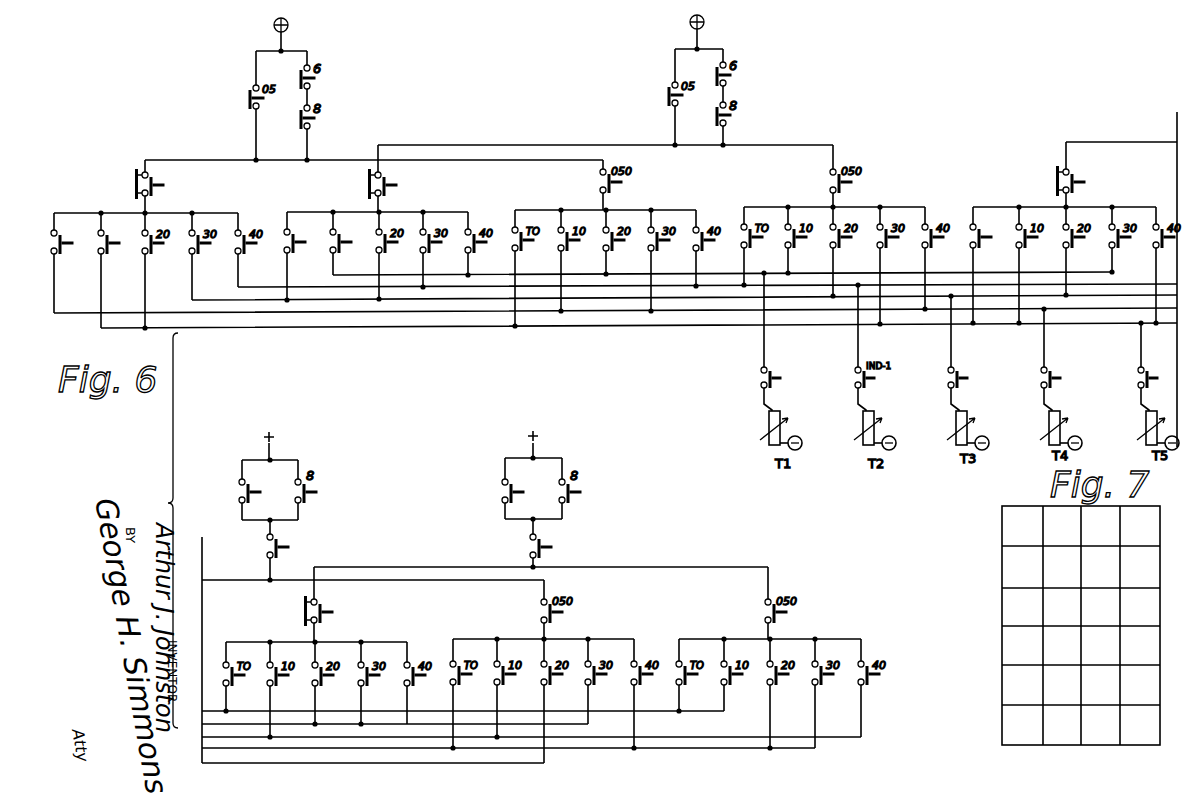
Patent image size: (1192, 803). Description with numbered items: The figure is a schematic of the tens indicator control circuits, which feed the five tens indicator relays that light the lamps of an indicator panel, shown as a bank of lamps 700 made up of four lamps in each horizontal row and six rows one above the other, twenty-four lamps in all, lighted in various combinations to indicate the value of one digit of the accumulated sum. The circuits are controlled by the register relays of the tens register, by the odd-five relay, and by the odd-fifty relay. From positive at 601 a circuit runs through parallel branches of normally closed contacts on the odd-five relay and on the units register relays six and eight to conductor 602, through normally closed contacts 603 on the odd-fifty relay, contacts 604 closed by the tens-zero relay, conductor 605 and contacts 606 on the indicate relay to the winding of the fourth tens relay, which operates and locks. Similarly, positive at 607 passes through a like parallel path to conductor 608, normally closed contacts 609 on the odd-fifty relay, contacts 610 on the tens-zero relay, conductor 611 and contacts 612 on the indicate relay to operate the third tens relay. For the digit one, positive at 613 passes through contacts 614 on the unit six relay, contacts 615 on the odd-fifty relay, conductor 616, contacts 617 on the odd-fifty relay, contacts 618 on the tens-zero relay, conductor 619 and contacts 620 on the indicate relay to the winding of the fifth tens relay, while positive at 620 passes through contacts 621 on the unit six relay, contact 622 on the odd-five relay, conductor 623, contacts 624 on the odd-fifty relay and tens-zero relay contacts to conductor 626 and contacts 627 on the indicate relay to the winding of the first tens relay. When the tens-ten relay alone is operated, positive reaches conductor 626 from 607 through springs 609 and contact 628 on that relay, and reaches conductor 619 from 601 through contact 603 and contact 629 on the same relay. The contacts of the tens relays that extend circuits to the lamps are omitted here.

In FIG. 6, the positive 601 is at (299, 25).
In FIG. 6, the conductor 602 is at (204, 160).
In FIG. 6, the normally closed contacts 603 is at (158, 185).
In FIG. 6, the contacts 604 is at (70, 245).
In FIG. 6, the conductor 605 is at (475, 313).
In FIG. 6, the contacts 606 is at (1056, 380).
In FIG. 6, the positive 607 is at (715, 22).
In FIG. 6, the conductor 608 is at (529, 145).
In FIG. 6, the normally closed contacts 609 is at (390, 185).
In FIG. 6, the contacts 610 is at (303, 244).
In FIG. 6, the conductor 611 is at (425, 299).
In FIG. 6, the contacts 612 is at (963, 380).
In FIG. 6, the positive 613 is at (287, 443).
In FIG. 6, the contacts 614 is at (245, 490).
In FIG. 6, the contacts 615 is at (283, 550).
In FIG. 6, the conductor 616 is at (1123, 142).
In FIG. 6, the contacts 617 is at (1078, 183).
In FIG. 6, the contacts 618 is at (990, 240).
In FIG. 6, the conductor 619 is at (910, 325).
In FIG. 6, the contacts 620 is at (1153, 380).
In FIG. 6, the contacts 621 is at (509, 490).
In FIG. 6, the contact 622 is at (546, 550).
In FIG. 6, the conductor 623 is at (417, 567).
In FIG. 6, the contacts 624 is at (324, 616).
In FIG. 6, the conductor 626 is at (1097, 273).
In FIG. 6, the contacts 627 is at (778, 380).
In FIG. 6, the contact 628 is at (349, 244).
In FIG. 6, the contact 629 is at (117, 245).
In FIG. 7, the bank of lamps 700 is at (1002, 508).